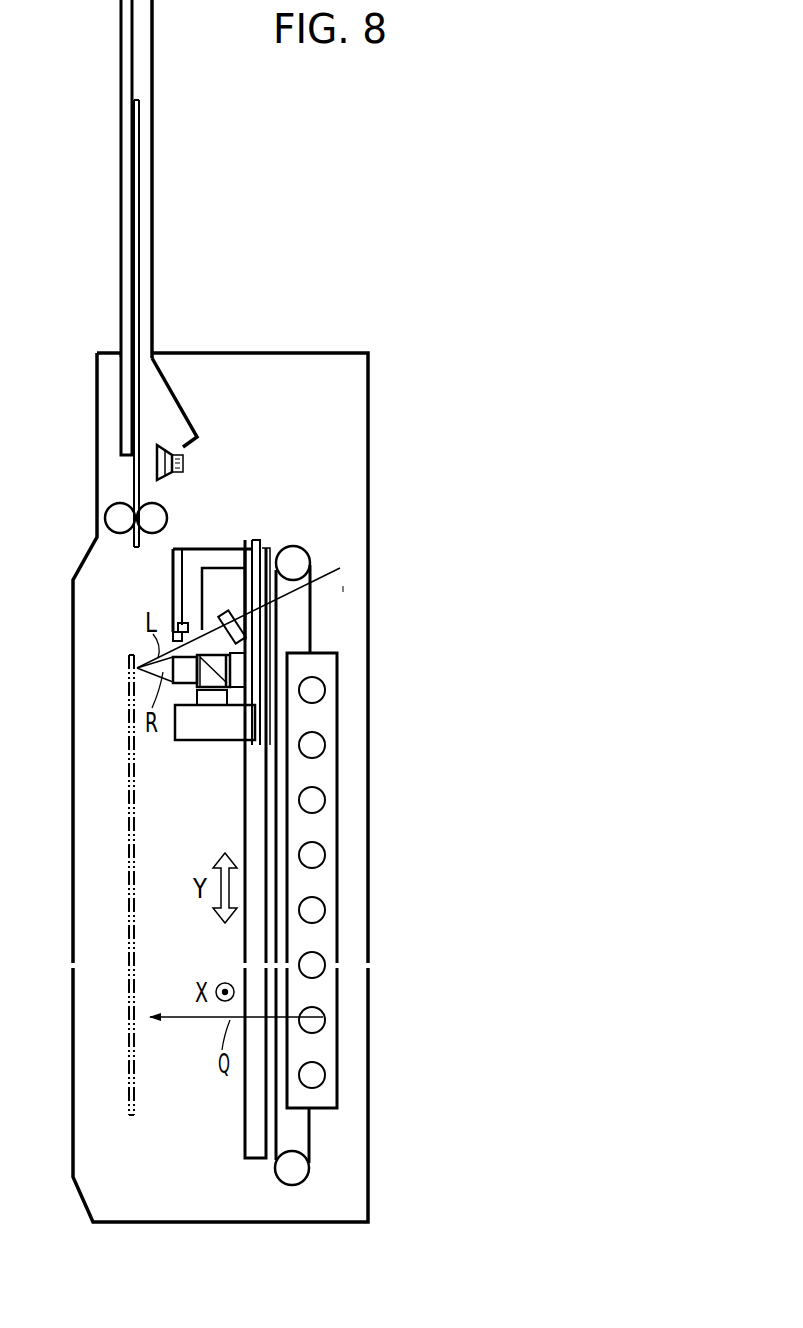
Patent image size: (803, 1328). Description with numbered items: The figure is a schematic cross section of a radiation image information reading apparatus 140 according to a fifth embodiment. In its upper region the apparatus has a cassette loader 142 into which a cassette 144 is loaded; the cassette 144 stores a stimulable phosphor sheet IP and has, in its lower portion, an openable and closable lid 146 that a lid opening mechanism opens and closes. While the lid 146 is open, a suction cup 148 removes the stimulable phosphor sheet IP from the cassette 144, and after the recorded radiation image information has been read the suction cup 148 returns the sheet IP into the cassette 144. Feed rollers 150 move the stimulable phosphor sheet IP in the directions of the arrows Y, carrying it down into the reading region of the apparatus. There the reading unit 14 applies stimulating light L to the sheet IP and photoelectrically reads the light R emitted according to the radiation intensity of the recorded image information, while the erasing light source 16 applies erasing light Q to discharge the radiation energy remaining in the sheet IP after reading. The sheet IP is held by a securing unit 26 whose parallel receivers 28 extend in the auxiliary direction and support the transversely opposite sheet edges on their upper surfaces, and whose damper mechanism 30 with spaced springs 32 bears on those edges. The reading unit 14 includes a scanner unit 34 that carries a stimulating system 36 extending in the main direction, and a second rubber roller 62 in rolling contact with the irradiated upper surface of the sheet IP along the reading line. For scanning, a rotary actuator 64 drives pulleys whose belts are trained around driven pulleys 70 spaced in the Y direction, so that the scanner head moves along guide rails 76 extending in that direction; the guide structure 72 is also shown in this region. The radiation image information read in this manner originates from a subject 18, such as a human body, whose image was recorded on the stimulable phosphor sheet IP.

The radiation image information reading apparatus 140 is at (392, 234).
The cassette 144 is at (157, 248).
The cassette loader 142 is at (160, 342).
The openable and closable lid 146 is at (190, 420).
The suction cup 148 is at (184, 463).
The feed rollers 150 is at (105, 520).
The reading unit 14 is at (148, 647).
The stimulable phosphor sheet IP is at (142, 177).
The erasing light source 16 is at (343, 589).
The springs 32 is at (227, 560).
The securing unit 26 is at (170, 610).
The scanner unit 34 is at (185, 620).
The receivers 28 is at (218, 650).
The stimulating system 36 is at (340, 568).
The damper mechanism 30 is at (237, 672).
The guide rail 72 is at (253, 1142).
The rotary actuator 64 is at (290, 560).
The second rubber roller 62 is at (290, 1170).
The driven pulleys 70 is at (312, 645).
The subject 18 is at (328, 1113).
The guide rails 76 is at (323, 1017).